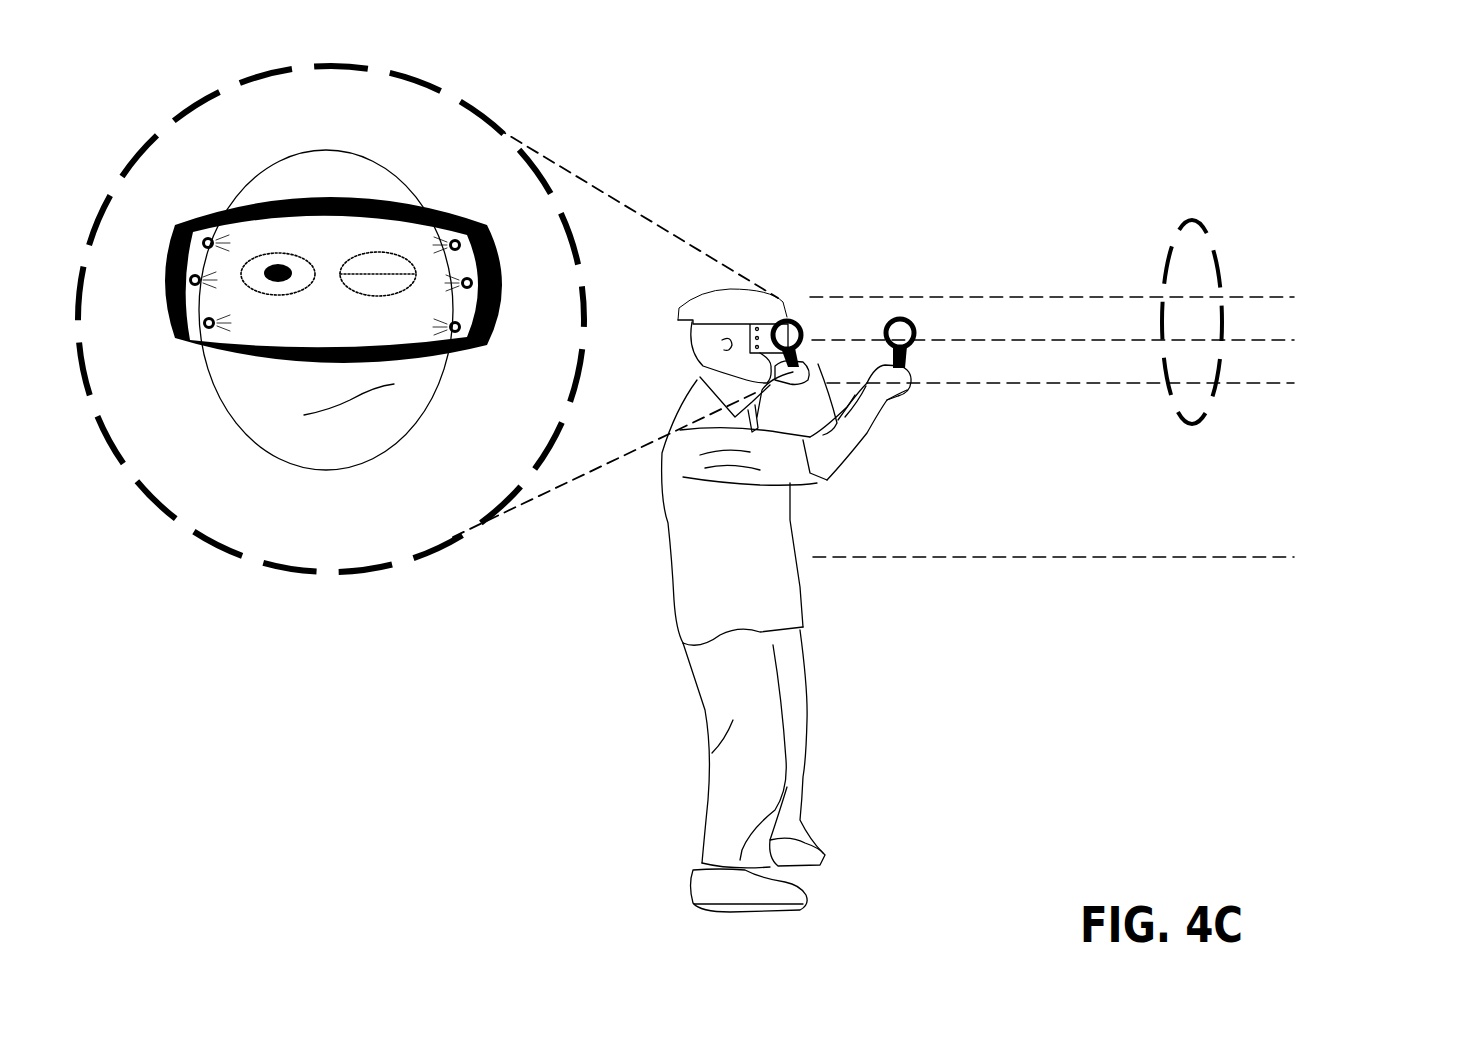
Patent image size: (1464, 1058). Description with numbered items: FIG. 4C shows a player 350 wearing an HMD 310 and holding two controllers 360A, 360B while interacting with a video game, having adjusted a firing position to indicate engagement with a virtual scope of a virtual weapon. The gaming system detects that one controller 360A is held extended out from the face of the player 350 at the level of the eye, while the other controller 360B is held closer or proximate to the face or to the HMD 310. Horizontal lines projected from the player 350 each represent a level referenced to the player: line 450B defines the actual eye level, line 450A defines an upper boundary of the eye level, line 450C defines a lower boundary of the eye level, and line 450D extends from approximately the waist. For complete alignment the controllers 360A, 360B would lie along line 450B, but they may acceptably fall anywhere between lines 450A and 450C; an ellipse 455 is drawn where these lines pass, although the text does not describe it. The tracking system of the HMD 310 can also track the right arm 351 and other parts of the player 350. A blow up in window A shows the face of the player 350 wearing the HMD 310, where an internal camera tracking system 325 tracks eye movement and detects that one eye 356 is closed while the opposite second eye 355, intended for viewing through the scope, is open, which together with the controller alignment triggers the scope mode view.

The HMD 310 is at (320, 197).
The internal camera and/or tracking system 325 is at (427, 247).
The player 350 is at (657, 620).
The right arm 351 is at (220, 413).
The second eye 355 is at (265, 253).
The first eye 356 is at (404, 296).
The controller 360A is at (905, 318).
The controller 360B is at (797, 320).
The target region 455 is at (1172, 222).
The line 450A is at (1297, 297).
The line 450B is at (1304, 342).
The line 450C is at (1299, 384).
The line 450D is at (1304, 559).
The window A is at (215, 547).